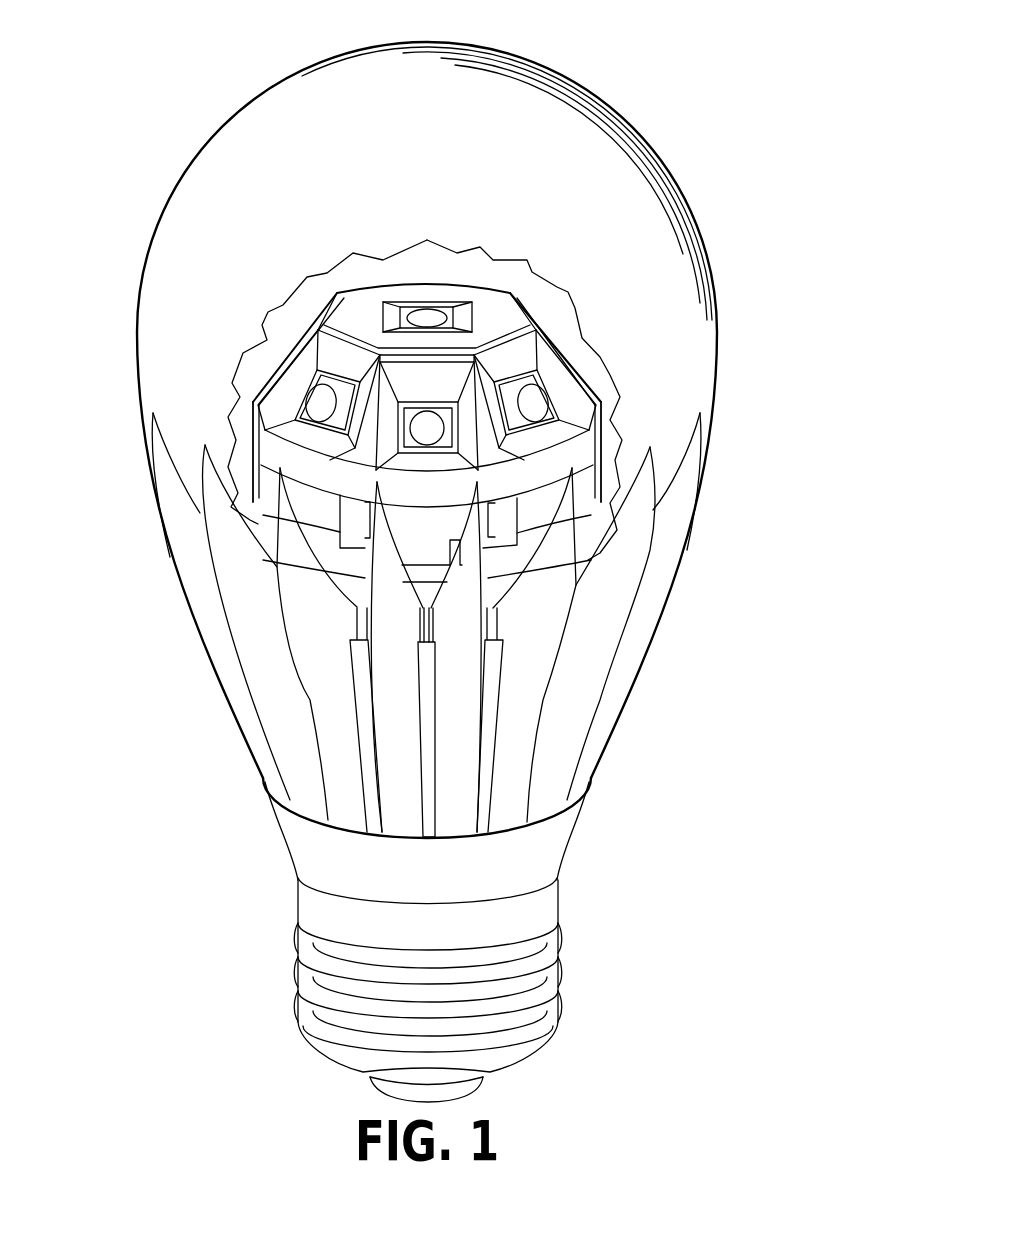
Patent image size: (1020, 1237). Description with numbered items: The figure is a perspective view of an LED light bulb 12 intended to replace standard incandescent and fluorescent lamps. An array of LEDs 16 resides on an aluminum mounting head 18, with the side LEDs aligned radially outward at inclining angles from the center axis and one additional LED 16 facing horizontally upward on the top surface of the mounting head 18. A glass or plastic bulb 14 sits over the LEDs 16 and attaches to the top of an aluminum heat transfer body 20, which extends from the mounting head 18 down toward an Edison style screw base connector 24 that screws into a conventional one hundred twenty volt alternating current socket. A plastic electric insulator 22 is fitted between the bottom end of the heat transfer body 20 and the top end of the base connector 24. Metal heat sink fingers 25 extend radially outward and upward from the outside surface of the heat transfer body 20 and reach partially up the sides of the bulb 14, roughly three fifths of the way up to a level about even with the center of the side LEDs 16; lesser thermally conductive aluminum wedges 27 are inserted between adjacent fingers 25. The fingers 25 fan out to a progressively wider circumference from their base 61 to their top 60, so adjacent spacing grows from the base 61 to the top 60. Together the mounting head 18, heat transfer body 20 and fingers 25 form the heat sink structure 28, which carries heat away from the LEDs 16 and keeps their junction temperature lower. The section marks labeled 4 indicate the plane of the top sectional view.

The LED light bulb 12 is at (662, 113).
The bulb 14 is at (664, 156).
The LEDs 16 is at (429, 310).
The mounting head 18 is at (360, 313).
The heat transfer body 20 is at (283, 532).
The electric insulator 22 is at (549, 840).
The base connector 24 is at (558, 955).
The heat sink fingers 25 is at (681, 500).
The aluminum wedges 27 is at (494, 657).
The heat sink structure 28 is at (186, 667).
The top of the fingers 60 is at (651, 446).
The base of the fingers 61 is at (351, 816).
The section line 4- 4 is at (206, 822).